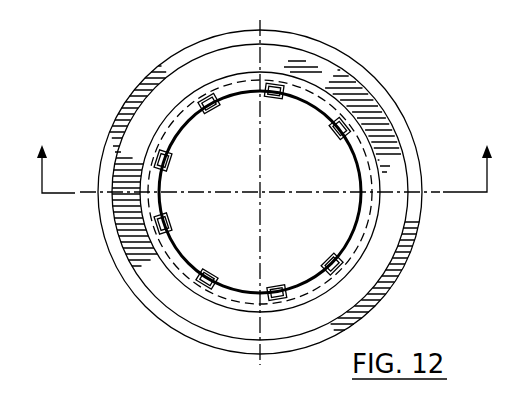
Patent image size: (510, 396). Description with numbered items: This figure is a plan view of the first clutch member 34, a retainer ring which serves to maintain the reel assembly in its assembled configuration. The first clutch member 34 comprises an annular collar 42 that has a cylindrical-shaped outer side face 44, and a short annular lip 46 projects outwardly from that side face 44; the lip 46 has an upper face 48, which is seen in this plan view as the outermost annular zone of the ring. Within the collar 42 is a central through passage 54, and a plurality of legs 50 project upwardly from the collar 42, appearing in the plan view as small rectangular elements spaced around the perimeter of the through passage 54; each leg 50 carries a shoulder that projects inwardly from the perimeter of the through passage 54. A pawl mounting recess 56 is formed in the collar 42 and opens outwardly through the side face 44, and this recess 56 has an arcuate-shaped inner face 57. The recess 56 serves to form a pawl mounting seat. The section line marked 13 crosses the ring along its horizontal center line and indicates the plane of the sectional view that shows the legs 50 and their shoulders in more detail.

The section line 13- 13 is at (264, 169).
The first clutch member 34 is at (122, 264).
The annular collar 42 is at (130, 239).
The cylindrical-shaped outer side face 44 is at (415, 237).
The annular lip 46 is at (400, 282).
The upper face 48 is at (412, 210).
The legs 50 is at (201, 91).
The through passage 54 is at (180, 256).
The pawl mounting recess 56 is at (140, 185).
The arcuate-shaped inner face 57 is at (137, 201).